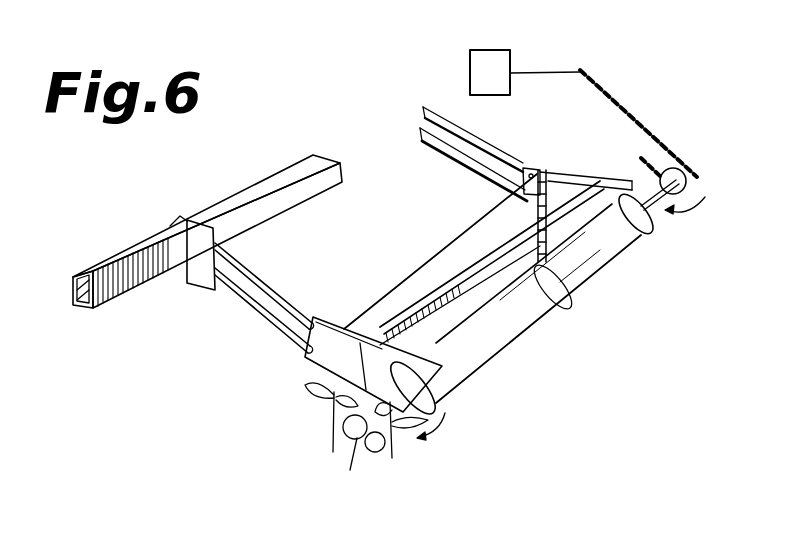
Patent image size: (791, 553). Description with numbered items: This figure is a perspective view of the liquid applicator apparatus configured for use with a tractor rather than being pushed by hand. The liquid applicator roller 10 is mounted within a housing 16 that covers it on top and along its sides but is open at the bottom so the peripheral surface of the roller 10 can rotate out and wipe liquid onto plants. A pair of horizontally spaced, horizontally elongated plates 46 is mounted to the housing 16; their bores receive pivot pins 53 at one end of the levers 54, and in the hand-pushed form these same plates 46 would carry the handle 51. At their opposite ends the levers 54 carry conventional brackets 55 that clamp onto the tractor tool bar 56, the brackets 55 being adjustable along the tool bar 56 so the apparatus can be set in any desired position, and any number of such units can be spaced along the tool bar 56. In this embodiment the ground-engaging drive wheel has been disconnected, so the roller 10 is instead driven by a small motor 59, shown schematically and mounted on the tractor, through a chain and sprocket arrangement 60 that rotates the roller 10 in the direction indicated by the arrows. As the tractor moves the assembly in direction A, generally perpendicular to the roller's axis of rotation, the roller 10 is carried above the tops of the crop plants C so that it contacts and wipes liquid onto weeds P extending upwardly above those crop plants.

The liquid applicator roller 10 is at (541, 370).
The housing 16 is at (484, 303).
The horizontally elongated plates 46 is at (338, 343).
The handle 51 is at (547, 186).
The pivot pins 53 is at (264, 310).
The levers 54 is at (261, 306).
The brackets 55 is at (211, 298).
The tractor tool bar 56 is at (103, 307).
The motor 59 is at (482, 67).
The chain and sprocket arrangement 60 is at (703, 157).
The direction of movement A is at (347, 468).
The crop plants C is at (364, 460).
The weeds P is at (392, 452).